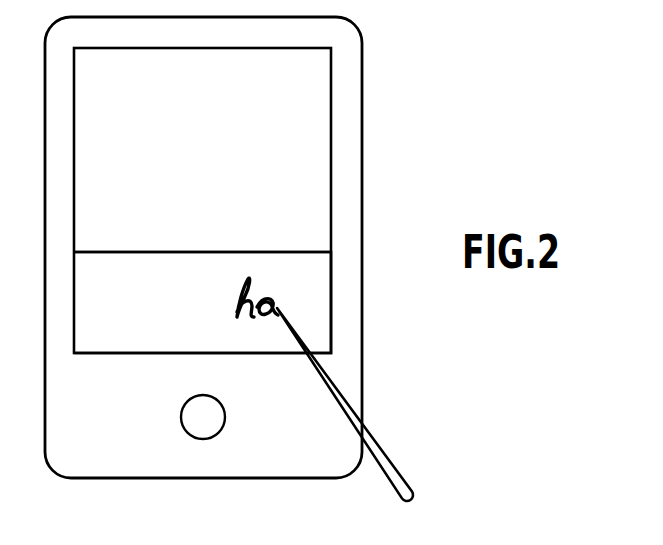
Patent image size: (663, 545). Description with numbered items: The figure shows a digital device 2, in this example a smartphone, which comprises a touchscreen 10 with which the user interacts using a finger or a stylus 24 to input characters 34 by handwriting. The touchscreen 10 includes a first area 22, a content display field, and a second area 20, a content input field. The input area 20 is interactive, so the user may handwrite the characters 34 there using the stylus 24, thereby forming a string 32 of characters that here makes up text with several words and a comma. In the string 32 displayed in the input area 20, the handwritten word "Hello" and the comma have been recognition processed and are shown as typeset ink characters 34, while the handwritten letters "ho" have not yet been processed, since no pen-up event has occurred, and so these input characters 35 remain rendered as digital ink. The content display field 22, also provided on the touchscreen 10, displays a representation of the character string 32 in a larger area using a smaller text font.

The digital device 2 is at (380, 100).
The touchscreen 10 is at (342, 157).
The first area 22 is at (305, 213).
The second area 20 is at (305, 303).
The stylus 24 is at (328, 387).
The string of characters 32 is at (136, 92).
The characters 34 is at (142, 321).
The input characters 35 is at (260, 290).